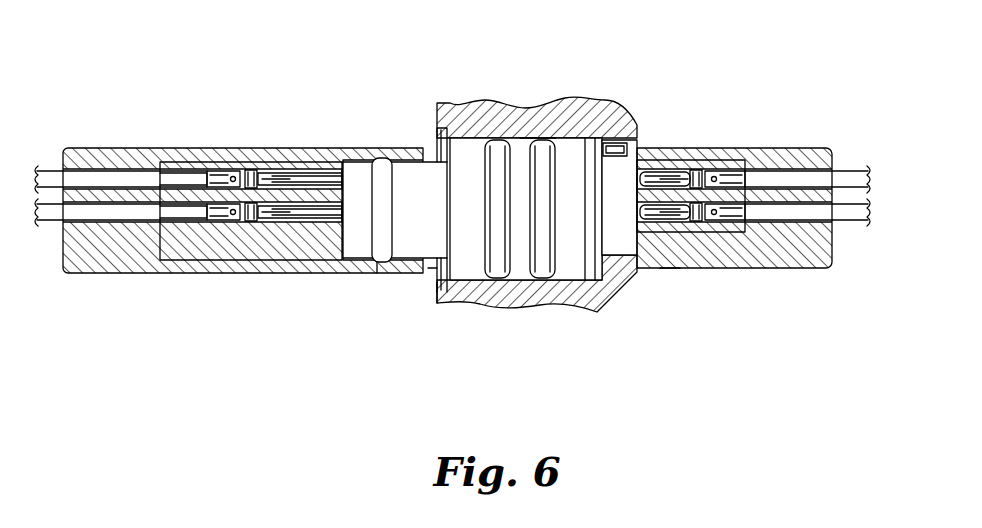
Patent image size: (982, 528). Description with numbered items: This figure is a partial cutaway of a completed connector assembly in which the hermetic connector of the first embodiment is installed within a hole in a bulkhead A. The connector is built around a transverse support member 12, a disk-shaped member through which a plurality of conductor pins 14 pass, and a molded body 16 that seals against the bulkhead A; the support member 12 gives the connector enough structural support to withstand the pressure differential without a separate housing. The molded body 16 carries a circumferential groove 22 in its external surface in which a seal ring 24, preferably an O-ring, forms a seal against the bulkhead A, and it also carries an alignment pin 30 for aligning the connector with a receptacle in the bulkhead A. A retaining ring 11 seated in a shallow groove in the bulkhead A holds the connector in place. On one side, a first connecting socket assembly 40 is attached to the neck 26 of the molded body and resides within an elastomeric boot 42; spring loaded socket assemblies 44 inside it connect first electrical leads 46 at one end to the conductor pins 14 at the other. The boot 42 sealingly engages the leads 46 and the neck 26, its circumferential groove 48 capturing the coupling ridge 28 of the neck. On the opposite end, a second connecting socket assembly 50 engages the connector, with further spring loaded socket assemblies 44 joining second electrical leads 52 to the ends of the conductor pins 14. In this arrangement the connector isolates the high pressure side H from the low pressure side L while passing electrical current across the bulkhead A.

The retaining ring 11 is at (440, 283).
The transverse support member 12 is at (593, 273).
The conductor pins 14 is at (318, 176).
The molded body 16 is at (468, 150).
The circumferential groove 22 is at (487, 145).
The seal ring 24 is at (493, 273).
The neck 26 is at (433, 158).
The coupling ridge 28 is at (377, 270).
The alignment pin 30 is at (632, 148).
The first connecting socket assembly 40 is at (245, 260).
The elastomeric boot 42 is at (148, 275).
The spring loaded socket assemblies 44 is at (272, 176).
The first electrical leads 46 is at (55, 171).
The circumferential groove 48 is at (383, 158).
The second connecting socket assembly 50 is at (760, 268).
The second electrical leads 52 is at (852, 171).
The bulkhead A is at (537, 138).
The high pressure side H is at (428, 268).
The low pressure side L is at (668, 268).